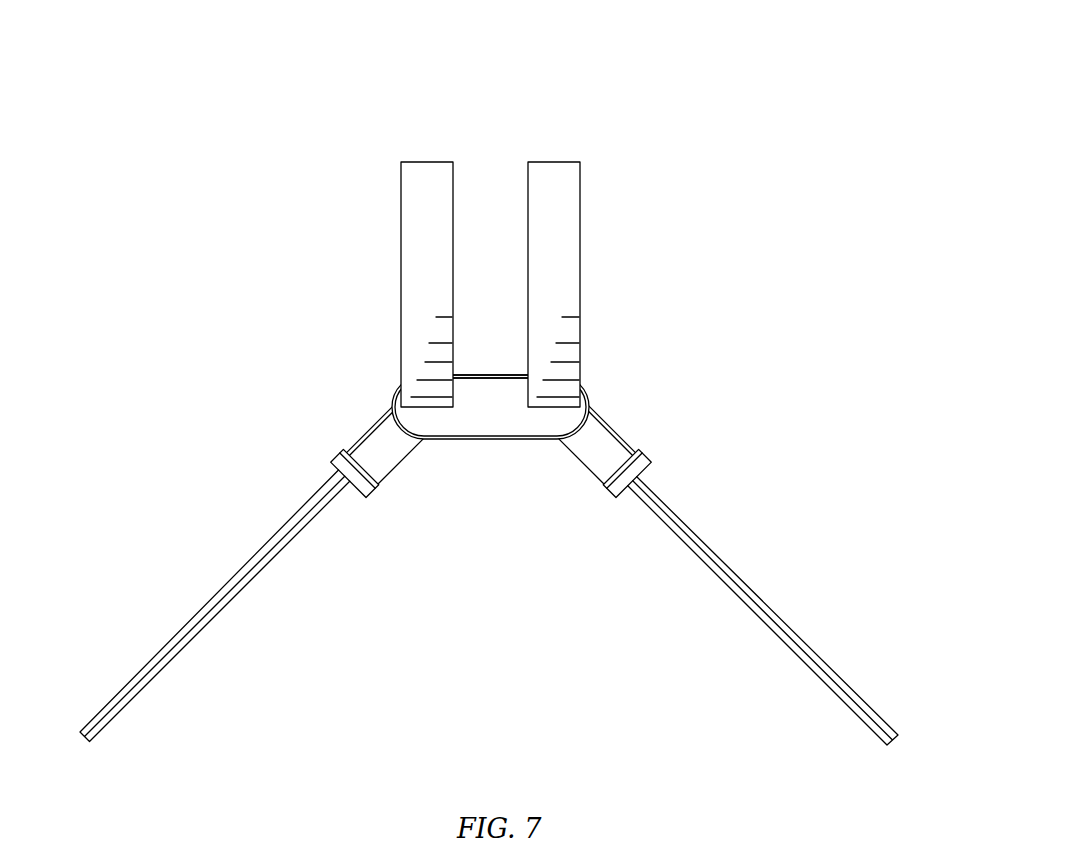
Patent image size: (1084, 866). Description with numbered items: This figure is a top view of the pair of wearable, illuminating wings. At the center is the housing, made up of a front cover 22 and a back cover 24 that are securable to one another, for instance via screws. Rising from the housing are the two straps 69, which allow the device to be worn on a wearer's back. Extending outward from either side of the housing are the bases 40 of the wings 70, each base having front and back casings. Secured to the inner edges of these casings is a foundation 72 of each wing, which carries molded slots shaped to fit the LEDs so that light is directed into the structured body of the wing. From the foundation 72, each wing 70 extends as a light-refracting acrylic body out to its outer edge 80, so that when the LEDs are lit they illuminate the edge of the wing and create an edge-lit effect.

The straps 69 is at (538, 167).
The front cover 22 is at (508, 395).
The back cover 24 is at (515, 425).
The bases of the wings 40 is at (494, 459).
The foundation of the wings 72 is at (491, 505).
The outer edge of the wings 80 is at (489, 607).
The wings 70 is at (498, 553).